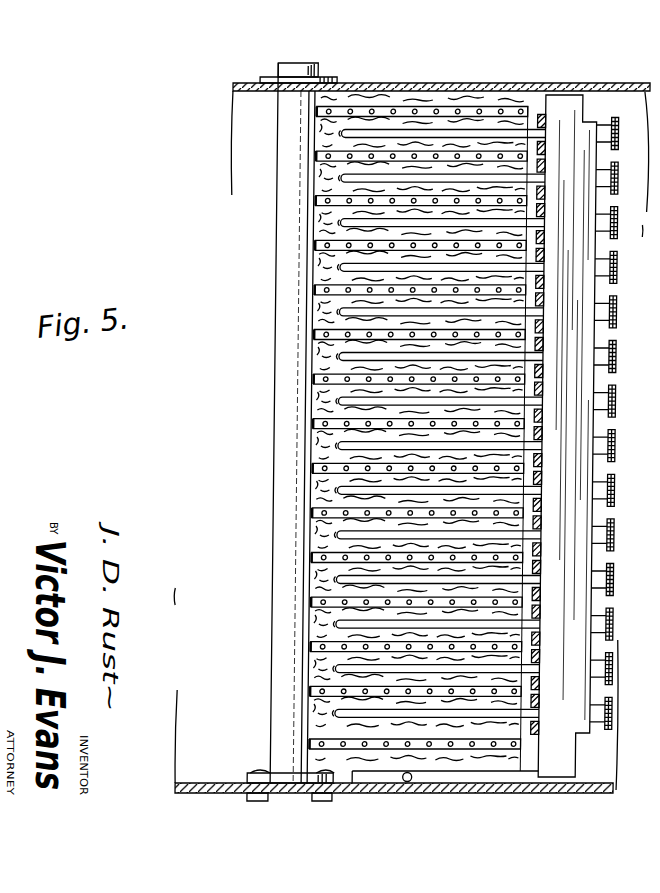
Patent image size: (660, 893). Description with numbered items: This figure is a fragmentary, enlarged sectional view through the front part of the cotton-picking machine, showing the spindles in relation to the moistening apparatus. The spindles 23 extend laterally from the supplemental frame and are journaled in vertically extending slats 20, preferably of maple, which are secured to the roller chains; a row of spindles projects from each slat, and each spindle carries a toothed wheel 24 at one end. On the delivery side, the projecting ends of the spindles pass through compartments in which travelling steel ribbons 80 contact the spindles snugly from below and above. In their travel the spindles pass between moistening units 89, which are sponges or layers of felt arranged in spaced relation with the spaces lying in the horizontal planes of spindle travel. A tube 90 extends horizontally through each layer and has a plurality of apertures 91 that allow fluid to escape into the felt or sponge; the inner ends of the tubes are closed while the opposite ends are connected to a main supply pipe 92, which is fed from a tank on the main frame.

The slats 20 is at (588, 200).
The toothed wheels 24 is at (609, 238).
The spindles 23 is at (322, 526).
The travelling steel ribbons 80 is at (534, 724).
The moistening units 89 is at (314, 396).
The tube 90 is at (314, 596).
The apertures 91 is at (314, 466).
The main supply pipe 92 is at (269, 238).